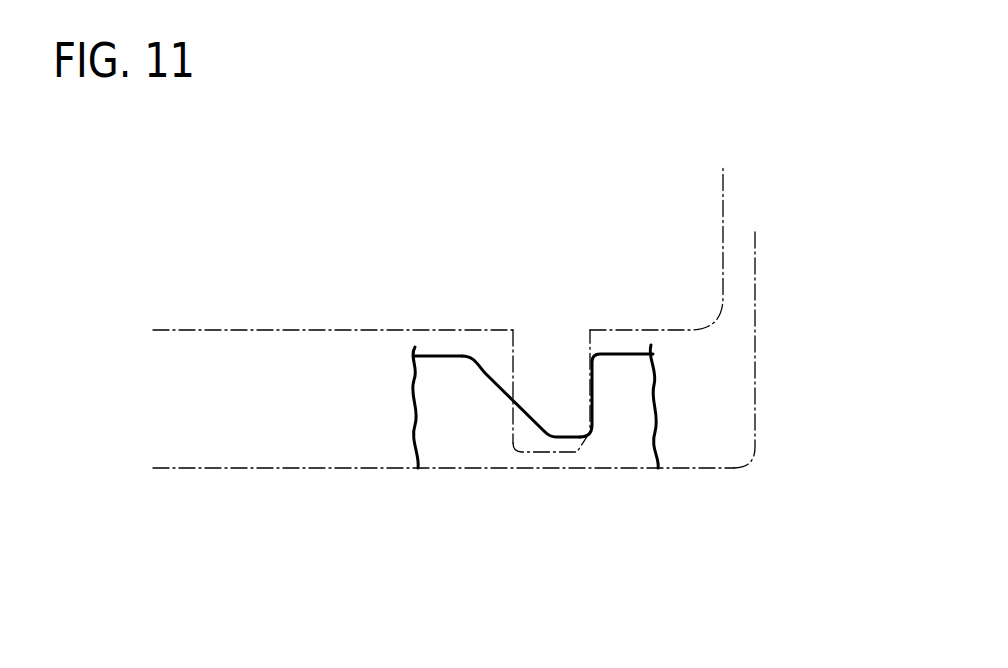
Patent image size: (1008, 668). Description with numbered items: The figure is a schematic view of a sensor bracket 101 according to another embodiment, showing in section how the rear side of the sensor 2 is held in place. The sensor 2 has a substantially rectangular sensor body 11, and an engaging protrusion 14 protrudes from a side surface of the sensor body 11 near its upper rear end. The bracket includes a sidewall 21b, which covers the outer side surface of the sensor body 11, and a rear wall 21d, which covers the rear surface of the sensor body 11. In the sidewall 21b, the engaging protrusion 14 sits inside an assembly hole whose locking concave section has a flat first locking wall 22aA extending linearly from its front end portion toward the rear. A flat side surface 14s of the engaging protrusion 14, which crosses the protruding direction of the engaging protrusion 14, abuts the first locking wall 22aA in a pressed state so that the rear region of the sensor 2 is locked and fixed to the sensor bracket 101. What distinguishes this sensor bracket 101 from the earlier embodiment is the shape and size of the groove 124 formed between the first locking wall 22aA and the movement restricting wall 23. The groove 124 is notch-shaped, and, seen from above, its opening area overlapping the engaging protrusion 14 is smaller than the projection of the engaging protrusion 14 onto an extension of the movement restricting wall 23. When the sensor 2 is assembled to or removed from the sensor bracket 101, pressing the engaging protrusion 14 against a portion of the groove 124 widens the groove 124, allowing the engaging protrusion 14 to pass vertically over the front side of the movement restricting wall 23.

The sensor 2 is at (485, 225).
The sensor body 11 is at (733, 177).
The rear wall 21d is at (755, 282).
The sidewall 21b is at (282, 470).
The engaging protrusion 14 is at (531, 415).
The side surface of the engaging protrusion 14s is at (512, 365).
The first locking wall 22aA is at (460, 485).
The groove 124 is at (543, 424).
The movement restricting wall 23 is at (620, 408).
The sensor bracket 101 is at (724, 470).